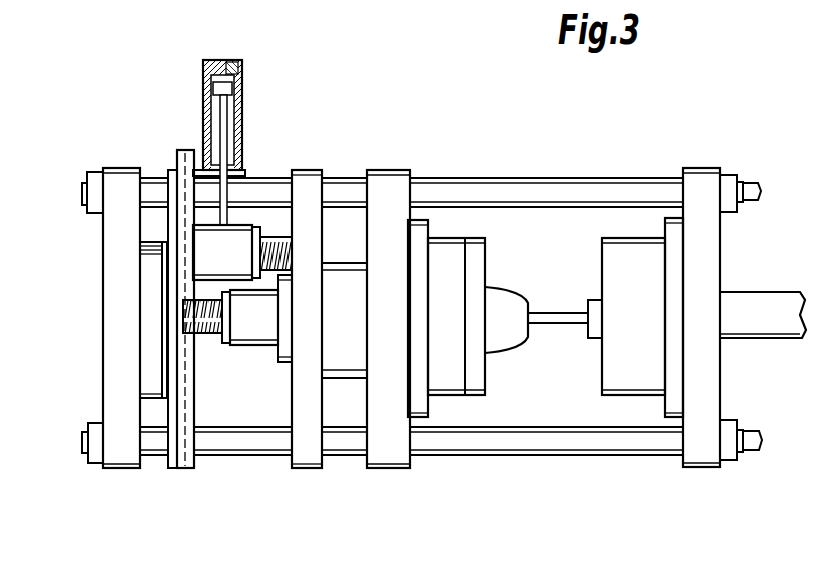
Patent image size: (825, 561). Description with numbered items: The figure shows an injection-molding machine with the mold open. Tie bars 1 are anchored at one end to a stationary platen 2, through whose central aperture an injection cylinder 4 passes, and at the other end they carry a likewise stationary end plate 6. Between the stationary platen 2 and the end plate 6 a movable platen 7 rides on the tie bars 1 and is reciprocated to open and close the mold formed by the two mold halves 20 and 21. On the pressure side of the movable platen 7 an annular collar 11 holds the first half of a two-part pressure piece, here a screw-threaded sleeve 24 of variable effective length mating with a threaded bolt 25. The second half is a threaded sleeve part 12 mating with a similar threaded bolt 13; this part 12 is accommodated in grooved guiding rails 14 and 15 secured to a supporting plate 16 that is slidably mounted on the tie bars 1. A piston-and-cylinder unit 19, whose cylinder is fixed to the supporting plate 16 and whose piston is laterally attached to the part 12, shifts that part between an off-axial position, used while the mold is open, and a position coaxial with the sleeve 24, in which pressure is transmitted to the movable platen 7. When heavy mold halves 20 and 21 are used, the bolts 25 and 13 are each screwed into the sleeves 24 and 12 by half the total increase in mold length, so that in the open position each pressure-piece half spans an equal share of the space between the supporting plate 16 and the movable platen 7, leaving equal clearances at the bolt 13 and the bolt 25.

The tie bars 1 is at (523, 193).
The stationary platen 2 is at (699, 188).
The injection cylinder 4 is at (763, 313).
The end plate 6 is at (113, 192).
The movable platen 7 is at (374, 192).
The annular collar 11 is at (288, 365).
The pressure-piece part 12 is at (224, 237).
The threaded bolt 13 is at (270, 236).
The guiding rail 14 is at (188, 285).
The guiding rail 15 is at (112, 320).
The supporting plate 16 is at (174, 182).
The piston-and-cylinder unit 19 is at (242, 92).
The mold half 20 is at (455, 255).
The mold half 21 is at (628, 265).
The sleeve 24 is at (252, 333).
The threaded bolt 25 is at (217, 334).